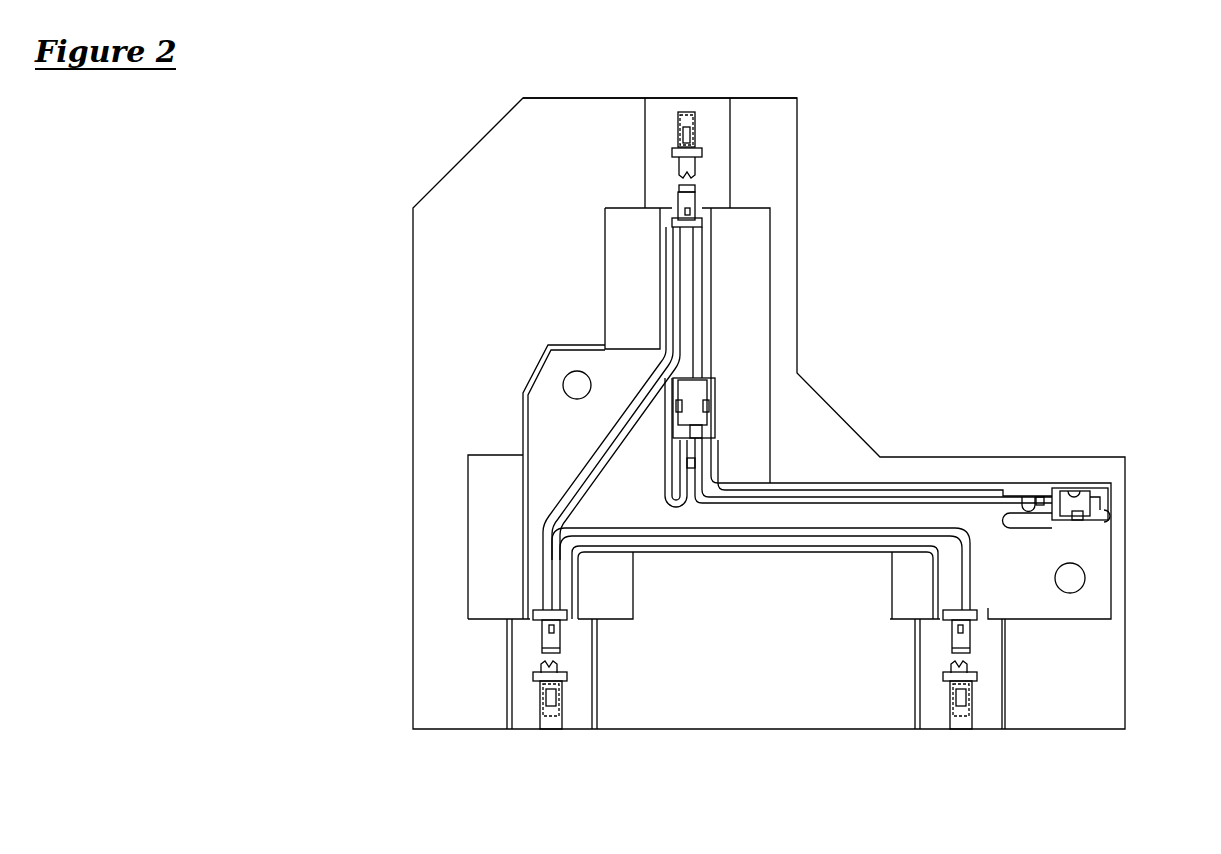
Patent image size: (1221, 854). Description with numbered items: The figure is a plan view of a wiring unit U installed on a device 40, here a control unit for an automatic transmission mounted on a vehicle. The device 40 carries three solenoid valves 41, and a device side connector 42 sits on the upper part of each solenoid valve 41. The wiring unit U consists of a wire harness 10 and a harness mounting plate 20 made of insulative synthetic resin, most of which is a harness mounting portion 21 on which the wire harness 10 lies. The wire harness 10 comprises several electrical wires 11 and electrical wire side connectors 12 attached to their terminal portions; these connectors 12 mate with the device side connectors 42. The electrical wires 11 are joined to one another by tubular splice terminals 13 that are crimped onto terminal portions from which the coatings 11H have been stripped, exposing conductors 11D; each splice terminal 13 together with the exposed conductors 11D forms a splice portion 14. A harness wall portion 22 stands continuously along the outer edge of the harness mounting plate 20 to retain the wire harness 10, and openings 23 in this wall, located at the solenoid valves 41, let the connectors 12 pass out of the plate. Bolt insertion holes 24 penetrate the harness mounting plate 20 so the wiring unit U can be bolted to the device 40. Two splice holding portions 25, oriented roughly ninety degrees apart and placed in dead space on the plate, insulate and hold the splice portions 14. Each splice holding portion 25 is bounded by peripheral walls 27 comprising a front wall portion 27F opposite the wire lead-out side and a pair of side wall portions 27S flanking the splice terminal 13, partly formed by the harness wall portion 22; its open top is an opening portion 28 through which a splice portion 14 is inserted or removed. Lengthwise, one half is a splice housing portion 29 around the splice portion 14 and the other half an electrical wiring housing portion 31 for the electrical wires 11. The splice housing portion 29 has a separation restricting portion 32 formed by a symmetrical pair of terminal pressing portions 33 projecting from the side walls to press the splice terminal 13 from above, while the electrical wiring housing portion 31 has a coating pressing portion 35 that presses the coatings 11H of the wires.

The wiring unit U is at (642, 253).
The wire harness 10 is at (848, 497).
The electrical wires 11 is at (583, 452).
The coatings 11H is at (1000, 490).
The conductors 11D is at (1075, 490).
The electrical wire side connectors 12 is at (965, 640).
The splice terminals 13 is at (1108, 498).
The splice portions 14 is at (1090, 500).
The harness mounting plate 20 is at (586, 497).
The harness mounting portion 21 is at (763, 517).
The harness wall portion 22 is at (532, 372).
The openings 23 is at (946, 622).
The bolt insertion holes 24 is at (1078, 588).
The splice holding portions 25 is at (703, 423).
The peripheral walls 27 is at (724, 806).
The front wall portion 27F is at (673, 458).
The side wall portions 27S is at (708, 455).
The opening portions 28 is at (1098, 518).
The splice housing portion 29 is at (1100, 492).
The electrical wiring housing portion 31 is at (1017, 497).
The separation restricting portion 32 is at (706, 406).
The terminal pressing portions 33 is at (708, 408).
The coating pressing portion 35 is at (696, 460).
The device 40 is at (1090, 690).
The solenoid valves 41 is at (985, 722).
The device side connectors 42 is at (960, 720).